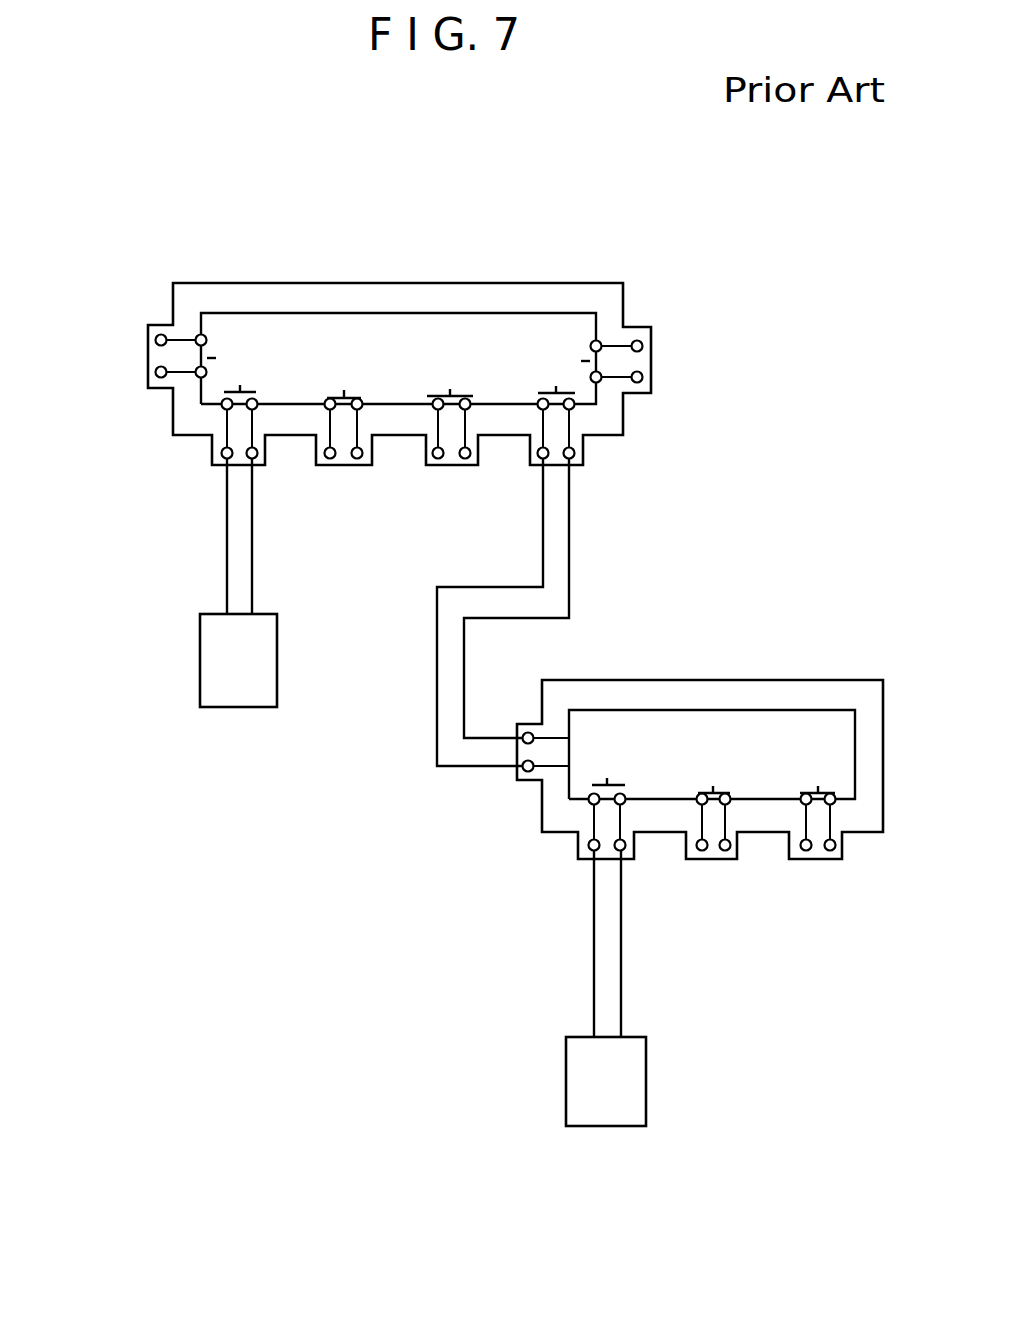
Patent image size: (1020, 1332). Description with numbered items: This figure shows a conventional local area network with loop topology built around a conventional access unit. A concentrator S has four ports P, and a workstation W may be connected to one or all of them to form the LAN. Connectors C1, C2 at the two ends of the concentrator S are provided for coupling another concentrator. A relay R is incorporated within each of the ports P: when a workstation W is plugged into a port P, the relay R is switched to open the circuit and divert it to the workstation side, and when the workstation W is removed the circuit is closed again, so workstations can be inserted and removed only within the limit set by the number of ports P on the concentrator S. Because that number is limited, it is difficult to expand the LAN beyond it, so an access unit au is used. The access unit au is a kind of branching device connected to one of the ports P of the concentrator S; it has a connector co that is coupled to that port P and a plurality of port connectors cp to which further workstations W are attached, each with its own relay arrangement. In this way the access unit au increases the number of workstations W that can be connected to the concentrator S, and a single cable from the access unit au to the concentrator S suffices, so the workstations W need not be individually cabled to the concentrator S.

The concentrator S is at (547, 276).
The connector C1 is at (162, 327).
The connector C2 is at (652, 360).
The relay R is at (337, 397).
The port P is at (335, 468).
The workstation W is at (232, 687).
The access unit au is at (748, 672).
The connector co is at (518, 753).
The port connector cp is at (713, 860).